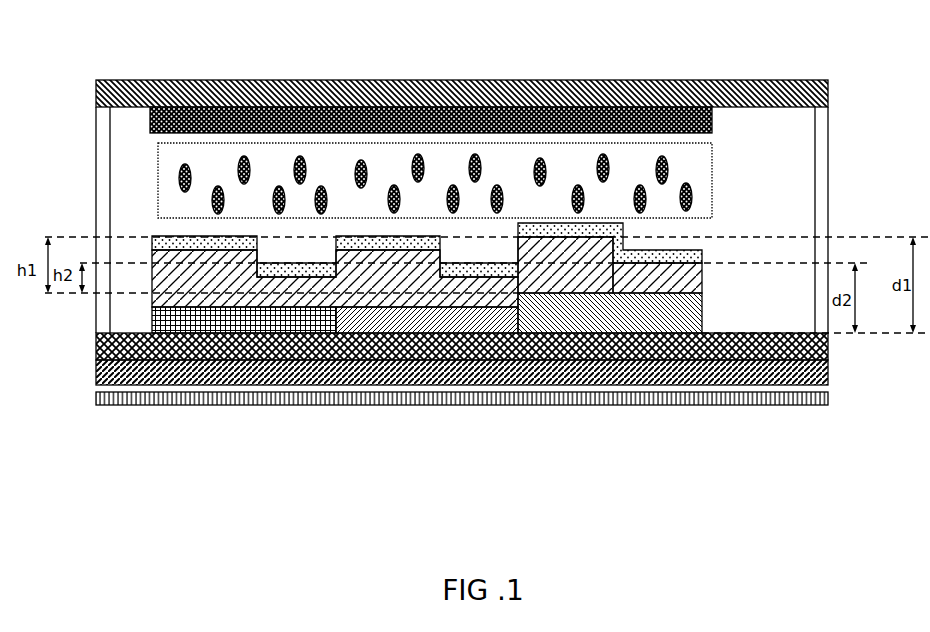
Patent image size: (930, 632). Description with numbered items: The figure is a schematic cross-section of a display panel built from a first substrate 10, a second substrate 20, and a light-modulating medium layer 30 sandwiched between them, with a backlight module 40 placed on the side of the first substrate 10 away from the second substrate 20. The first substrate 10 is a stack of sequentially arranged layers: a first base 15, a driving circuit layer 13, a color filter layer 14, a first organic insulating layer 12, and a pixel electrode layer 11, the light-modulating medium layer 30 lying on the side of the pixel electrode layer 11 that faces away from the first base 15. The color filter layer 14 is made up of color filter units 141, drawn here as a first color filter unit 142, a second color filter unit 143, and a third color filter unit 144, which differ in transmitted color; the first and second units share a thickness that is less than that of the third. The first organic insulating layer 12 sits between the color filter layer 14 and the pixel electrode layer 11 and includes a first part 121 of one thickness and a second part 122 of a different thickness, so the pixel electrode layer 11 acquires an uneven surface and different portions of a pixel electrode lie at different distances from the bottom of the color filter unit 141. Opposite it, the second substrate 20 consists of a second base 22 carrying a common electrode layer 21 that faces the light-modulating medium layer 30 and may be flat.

The first substrate 10 is at (462, 375).
The pixel electrode layer 11 is at (702, 253).
The first organic insulating layer 12 is at (440, 358).
The first part 121 is at (575, 255).
The second part 122 is at (672, 280).
The driving circuit layer 13 is at (220, 345).
The color filter layer 14 is at (427, 385).
The color filter unit 141 is at (427, 367).
The first color filter unit 142 is at (288, 320).
The second color filter unit 143 is at (403, 325).
The third color filter unit 144 is at (577, 325).
The first base 15 is at (777, 480).
The second substrate 20 is at (462, 76).
The common electrode layer 21 is at (437, 120).
The second base 22 is at (370, 100).
The light-modulating medium layer 30 is at (642, 152).
The backlight module 40 is at (813, 400).